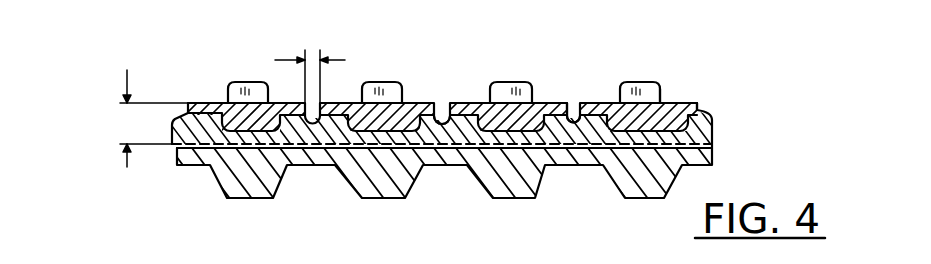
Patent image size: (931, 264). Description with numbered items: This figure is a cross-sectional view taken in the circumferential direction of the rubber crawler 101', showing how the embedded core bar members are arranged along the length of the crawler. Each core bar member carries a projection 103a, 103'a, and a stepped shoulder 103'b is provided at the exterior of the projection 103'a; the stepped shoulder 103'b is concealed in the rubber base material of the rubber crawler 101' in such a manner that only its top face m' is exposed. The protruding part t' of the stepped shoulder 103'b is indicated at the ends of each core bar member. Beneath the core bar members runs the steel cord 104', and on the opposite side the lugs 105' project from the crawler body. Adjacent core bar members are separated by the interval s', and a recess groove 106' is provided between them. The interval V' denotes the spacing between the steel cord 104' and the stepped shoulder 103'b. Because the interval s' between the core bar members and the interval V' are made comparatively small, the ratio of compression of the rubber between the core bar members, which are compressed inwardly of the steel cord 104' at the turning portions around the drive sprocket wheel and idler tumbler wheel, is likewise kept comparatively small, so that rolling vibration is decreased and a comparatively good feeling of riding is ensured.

The rubber crawler 101' is at (455, 111).
The projection (first) 103a is at (251, 92).
The projection 103'a is at (396, 64).
The stepped shoulder 103'b is at (578, 64).
The steel cord 104' is at (410, 181).
The lug 105' is at (428, 189).
The recess groove 106' is at (519, 171).
The interval between the core bar members s' is at (310, 63).
The protruding part t' is at (634, 85).
The top face m' is at (661, 81).
The interval between the steel cord and the stepped shoulder V' is at (153, 118).